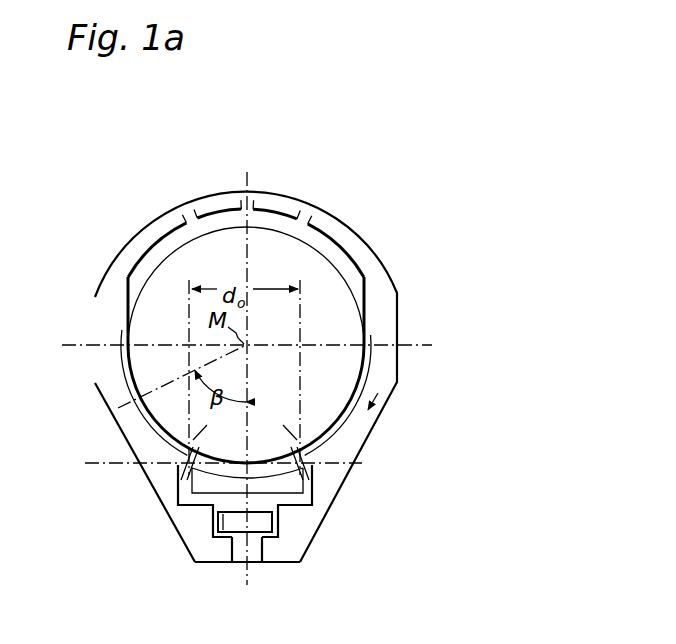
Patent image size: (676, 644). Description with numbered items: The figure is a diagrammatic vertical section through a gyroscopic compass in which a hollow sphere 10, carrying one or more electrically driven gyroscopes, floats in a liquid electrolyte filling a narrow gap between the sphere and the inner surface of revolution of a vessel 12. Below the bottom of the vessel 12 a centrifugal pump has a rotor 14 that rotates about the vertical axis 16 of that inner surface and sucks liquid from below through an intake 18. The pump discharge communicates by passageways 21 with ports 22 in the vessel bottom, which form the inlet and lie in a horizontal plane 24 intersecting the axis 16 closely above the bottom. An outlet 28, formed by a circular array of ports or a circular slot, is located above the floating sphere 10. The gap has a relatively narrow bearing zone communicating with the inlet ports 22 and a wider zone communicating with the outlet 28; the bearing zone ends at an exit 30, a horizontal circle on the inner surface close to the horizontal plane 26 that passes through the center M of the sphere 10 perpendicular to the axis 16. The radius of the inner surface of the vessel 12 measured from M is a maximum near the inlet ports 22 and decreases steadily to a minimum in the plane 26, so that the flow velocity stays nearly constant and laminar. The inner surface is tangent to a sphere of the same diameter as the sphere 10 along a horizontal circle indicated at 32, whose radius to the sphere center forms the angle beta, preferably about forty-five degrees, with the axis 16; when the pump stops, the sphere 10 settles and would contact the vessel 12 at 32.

The hollow sphere 10 is at (275, 266).
The vessel 12 is at (157, 445).
The rotor 14 is at (223, 528).
The vertical axis 16 is at (248, 563).
The intake 18 is at (242, 555).
The passageways 21 is at (190, 503).
The ports 22 is at (188, 455).
The horizontal plane 24 is at (85, 463).
The horizontal plane 26 is at (63, 346).
The outlet 28 is at (187, 217).
The exit 30 is at (130, 318).
The line of tangency 32 is at (130, 412).